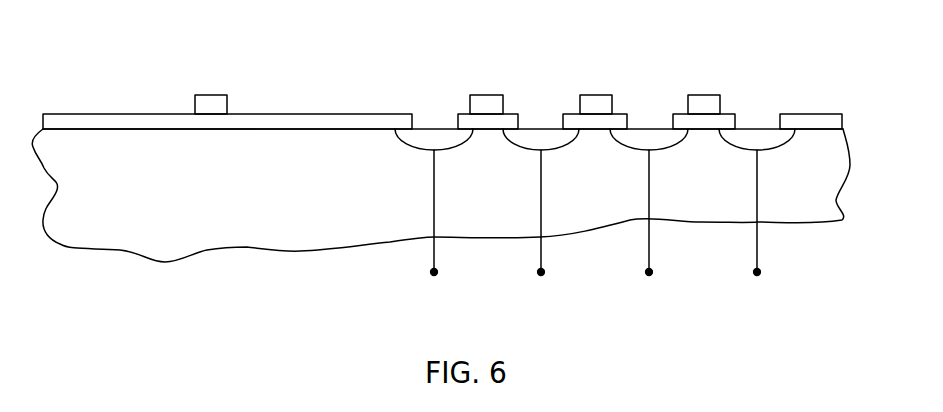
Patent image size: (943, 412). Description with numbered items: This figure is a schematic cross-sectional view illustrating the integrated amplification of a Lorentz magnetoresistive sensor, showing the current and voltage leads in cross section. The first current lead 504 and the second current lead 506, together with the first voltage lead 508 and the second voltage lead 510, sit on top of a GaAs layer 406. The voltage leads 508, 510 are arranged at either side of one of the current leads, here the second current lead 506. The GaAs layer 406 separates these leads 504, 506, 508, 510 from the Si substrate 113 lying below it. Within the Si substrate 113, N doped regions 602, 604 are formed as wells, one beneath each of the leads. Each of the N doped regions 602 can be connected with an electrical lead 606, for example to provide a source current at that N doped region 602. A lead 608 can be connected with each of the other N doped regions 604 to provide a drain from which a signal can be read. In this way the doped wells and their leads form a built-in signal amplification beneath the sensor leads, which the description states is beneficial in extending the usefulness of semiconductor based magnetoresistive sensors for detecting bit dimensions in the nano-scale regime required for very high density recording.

The Si substrate 113 is at (441, 195).
The GaAs layer 406 is at (360, 120).
The first current lead I1 504 is at (195, 96).
The second current lead I2 506 is at (614, 101).
The first voltage lead V1 508 is at (475, 95).
The second voltage lead V2 510 is at (702, 95).
The N doped region 602 is at (546, 150).
The N doped region 604 is at (438, 150).
The electrical lead 606 is at (543, 250).
The lead 608 is at (436, 255).